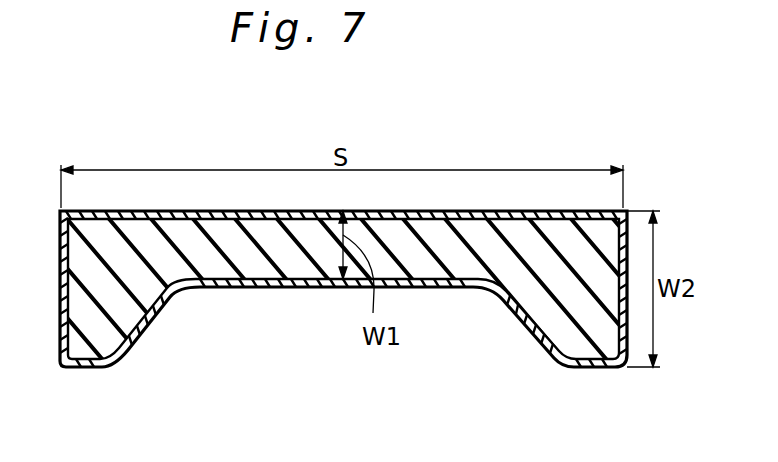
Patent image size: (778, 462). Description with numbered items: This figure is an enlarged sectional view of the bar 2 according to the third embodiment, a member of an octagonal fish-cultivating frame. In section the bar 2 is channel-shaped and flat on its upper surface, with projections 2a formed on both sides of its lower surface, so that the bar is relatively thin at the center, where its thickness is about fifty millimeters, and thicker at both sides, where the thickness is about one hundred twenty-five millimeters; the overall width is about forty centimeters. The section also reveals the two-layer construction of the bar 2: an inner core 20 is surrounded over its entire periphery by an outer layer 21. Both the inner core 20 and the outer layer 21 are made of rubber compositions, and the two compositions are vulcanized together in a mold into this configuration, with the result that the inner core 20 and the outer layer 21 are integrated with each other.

The bar 2 is at (252, 131).
The projections 2a is at (100, 368).
The inner core 20 is at (257, 262).
The outer layer 21 is at (197, 290).